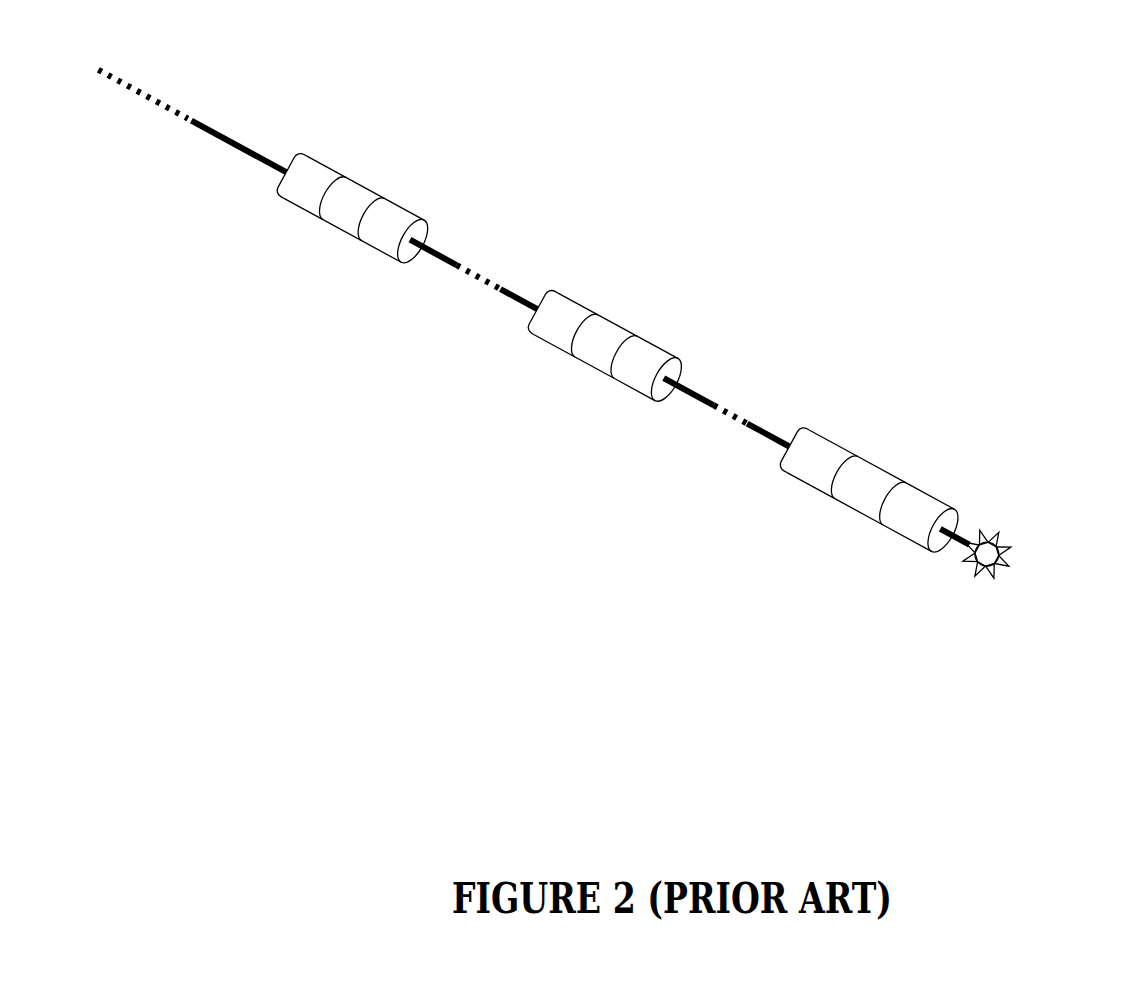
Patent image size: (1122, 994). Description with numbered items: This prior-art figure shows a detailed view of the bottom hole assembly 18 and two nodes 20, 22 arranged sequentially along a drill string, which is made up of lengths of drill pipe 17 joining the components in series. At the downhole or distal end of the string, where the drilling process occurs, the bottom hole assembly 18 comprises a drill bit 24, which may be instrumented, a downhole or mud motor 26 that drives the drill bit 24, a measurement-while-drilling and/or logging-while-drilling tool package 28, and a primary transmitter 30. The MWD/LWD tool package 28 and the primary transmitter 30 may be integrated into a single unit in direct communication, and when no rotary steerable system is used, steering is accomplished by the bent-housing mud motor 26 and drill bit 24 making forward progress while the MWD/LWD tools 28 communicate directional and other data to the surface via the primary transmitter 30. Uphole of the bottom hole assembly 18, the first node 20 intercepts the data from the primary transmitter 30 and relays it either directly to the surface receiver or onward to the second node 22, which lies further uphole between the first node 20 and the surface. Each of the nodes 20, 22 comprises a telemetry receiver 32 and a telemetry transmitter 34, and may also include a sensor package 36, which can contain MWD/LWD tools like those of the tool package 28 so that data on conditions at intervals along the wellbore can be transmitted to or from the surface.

The drill pipe 17 is at (220, 164).
The bottom hole assembly 18 is at (908, 538).
The node 20 is at (628, 336).
The second node 22 is at (361, 143).
The drill bit 24 is at (1029, 552).
The mud motor 26 is at (970, 500).
The MWD/LWD tool package 28 is at (917, 462).
The primary transmitter 30 is at (864, 431).
The telemetry receiver 32 is at (684, 323).
The telemetry transmitter 34 is at (575, 275).
The sensor package 36 is at (633, 298).